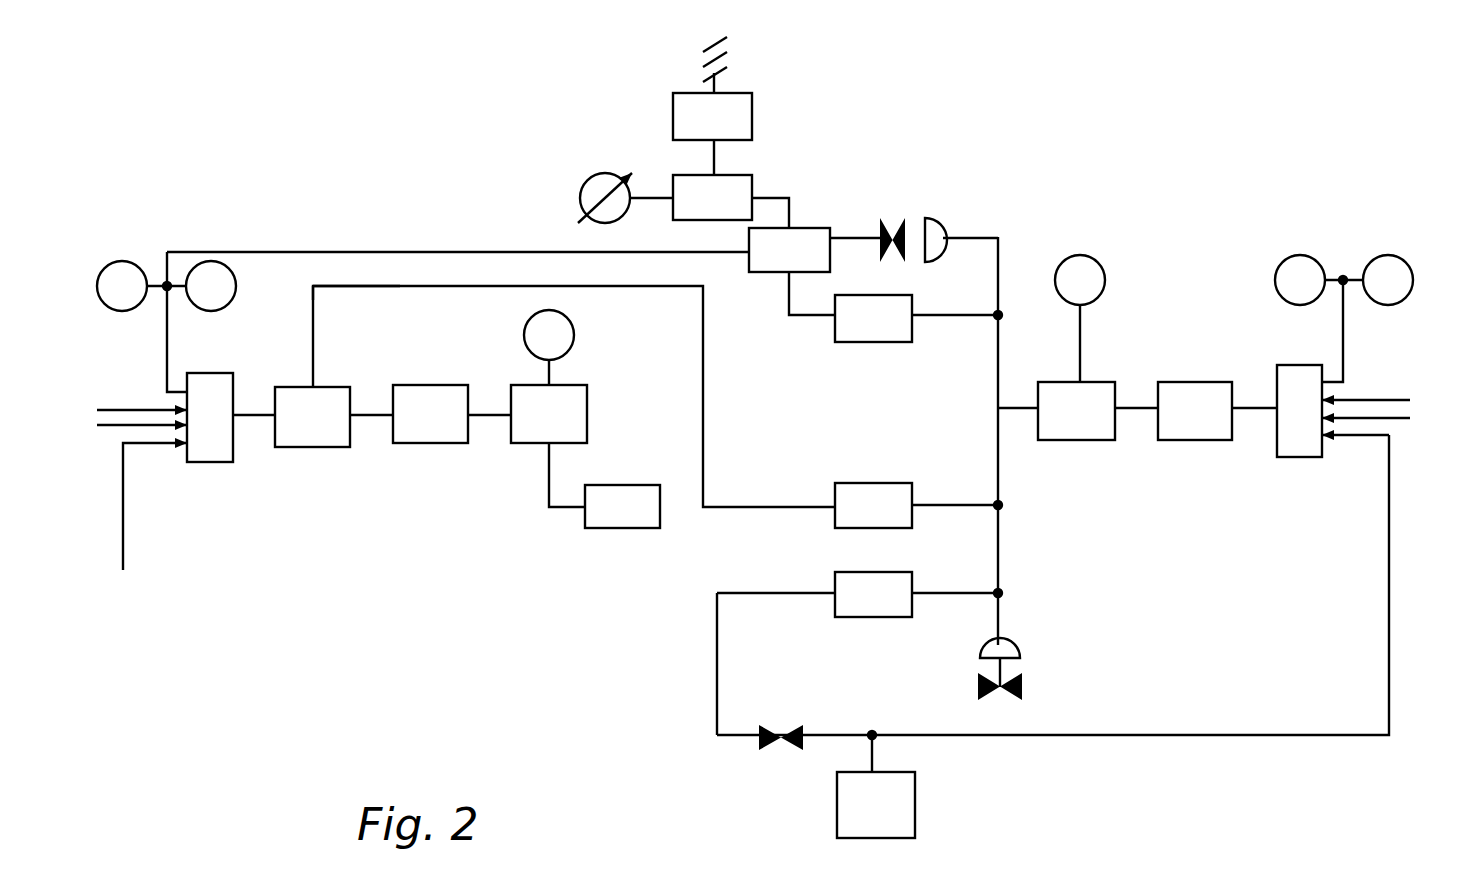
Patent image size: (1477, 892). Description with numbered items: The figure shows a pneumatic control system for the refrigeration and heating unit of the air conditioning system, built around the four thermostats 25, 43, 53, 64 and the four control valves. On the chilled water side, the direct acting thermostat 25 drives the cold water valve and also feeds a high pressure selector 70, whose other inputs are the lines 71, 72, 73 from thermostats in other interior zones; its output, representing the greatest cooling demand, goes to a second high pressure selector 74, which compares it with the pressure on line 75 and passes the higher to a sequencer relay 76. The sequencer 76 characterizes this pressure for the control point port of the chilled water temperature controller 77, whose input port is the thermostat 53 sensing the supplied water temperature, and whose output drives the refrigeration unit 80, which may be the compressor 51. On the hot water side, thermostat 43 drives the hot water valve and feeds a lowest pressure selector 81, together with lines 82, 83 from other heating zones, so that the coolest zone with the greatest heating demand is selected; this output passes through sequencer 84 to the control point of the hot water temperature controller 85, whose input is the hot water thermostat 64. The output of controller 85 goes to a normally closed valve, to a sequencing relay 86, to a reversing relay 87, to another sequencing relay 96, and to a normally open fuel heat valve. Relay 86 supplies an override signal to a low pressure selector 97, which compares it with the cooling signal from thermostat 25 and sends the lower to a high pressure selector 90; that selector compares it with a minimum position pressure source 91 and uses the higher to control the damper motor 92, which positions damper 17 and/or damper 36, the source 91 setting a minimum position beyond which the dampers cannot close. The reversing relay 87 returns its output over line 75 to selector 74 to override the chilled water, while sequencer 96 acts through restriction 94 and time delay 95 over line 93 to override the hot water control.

The damper 17 is at (720, 59).
The damper 36 is at (919, 58).
The thermostat 25 is at (125, 262).
The thermostat 43 is at (1385, 262).
The thermostat 53 is at (574, 335).
The thermostat 64 is at (1105, 280).
The high pressure selector 70 is at (205, 462).
The line 71 is at (130, 408).
The line 72 is at (147, 428).
The line 73 is at (123, 515).
The high pressure selector 74 is at (300, 447).
The line 75 is at (388, 286).
The sequencer relay 76 is at (415, 443).
The chilled water temperature controller 77 is at (580, 408).
The refrigeration unit 80 is at (585, 518).
The compressor 51 is at (616, 544).
The lowest pressure selector 81 is at (1315, 457).
The line 82 is at (1382, 397).
The line 83 is at (1397, 418).
The sequencer 84 is at (1180, 440).
The hot water temperature controller 85 is at (1063, 440).
The sequencing relay 86 is at (877, 332).
The reversing relay 87 is at (853, 483).
The high pressure selector 90 is at (740, 176).
The minimum position pressure source 91 is at (580, 191).
The damper motor 92 is at (742, 117).
The line 93 is at (1200, 735).
The restriction 94 is at (793, 750).
The time delay 95 is at (905, 800).
The sequencing relay 96 is at (870, 605).
The low pressure selector 97 is at (757, 272).